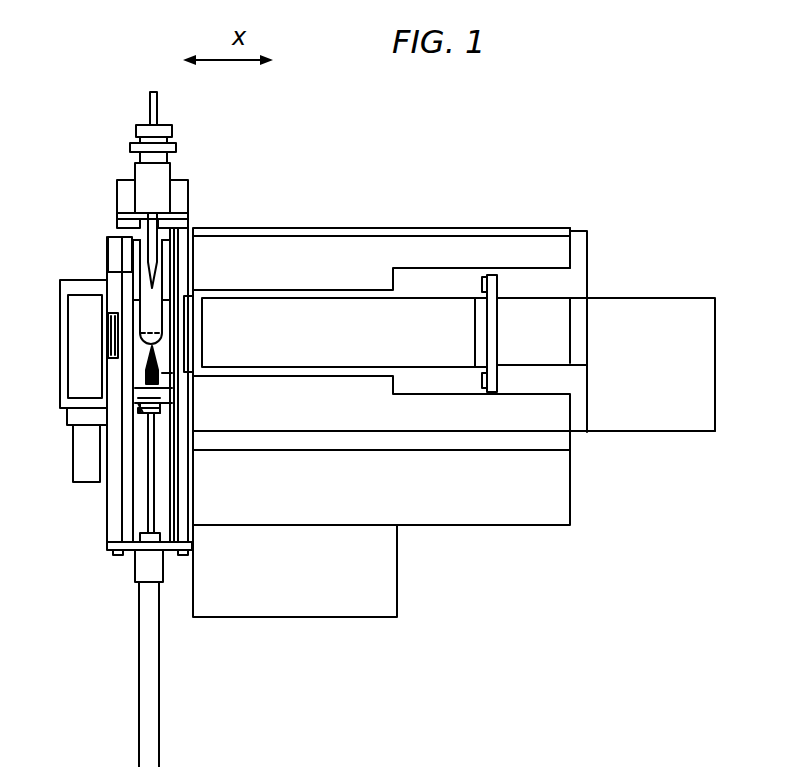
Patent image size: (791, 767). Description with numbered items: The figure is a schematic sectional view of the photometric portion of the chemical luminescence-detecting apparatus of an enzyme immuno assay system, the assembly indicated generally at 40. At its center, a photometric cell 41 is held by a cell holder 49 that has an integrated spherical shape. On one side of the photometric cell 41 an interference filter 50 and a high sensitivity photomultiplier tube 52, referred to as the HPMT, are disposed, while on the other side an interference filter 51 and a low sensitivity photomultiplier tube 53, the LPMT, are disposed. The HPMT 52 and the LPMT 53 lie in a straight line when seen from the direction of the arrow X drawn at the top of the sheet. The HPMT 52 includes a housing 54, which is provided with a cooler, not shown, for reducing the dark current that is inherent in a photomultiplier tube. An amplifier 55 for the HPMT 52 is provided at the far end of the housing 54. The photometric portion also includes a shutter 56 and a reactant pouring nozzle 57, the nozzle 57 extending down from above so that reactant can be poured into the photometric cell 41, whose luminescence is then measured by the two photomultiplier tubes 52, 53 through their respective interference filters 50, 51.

The dispensing head assembly 40 is at (212, 224).
The photometric cell 41 is at (140, 270).
The cell holder 49 is at (142, 357).
The interference filter 50 is at (196, 284).
The interference filter 51 is at (117, 328).
The high sensitivity photomultiplier tube 52 is at (323, 298).
The low sensitivity photomultiplier tube 53 is at (60, 337).
The housing 54 is at (441, 245).
The amplifier 55 is at (647, 297).
The shutter 56 is at (142, 410).
The reactant pouring nozzle 57 is at (150, 231).